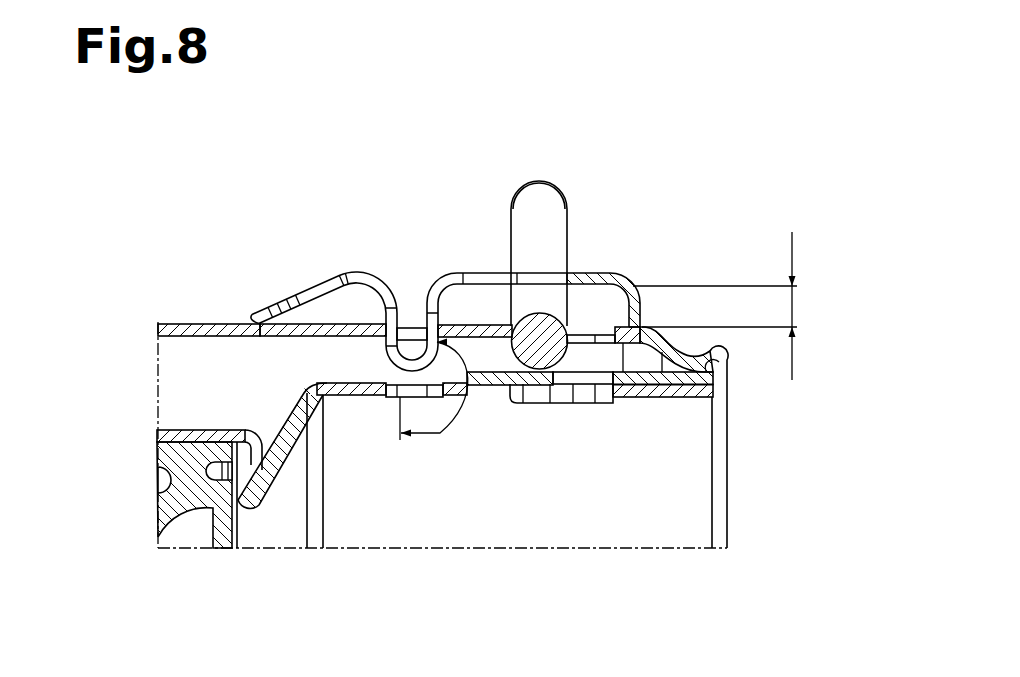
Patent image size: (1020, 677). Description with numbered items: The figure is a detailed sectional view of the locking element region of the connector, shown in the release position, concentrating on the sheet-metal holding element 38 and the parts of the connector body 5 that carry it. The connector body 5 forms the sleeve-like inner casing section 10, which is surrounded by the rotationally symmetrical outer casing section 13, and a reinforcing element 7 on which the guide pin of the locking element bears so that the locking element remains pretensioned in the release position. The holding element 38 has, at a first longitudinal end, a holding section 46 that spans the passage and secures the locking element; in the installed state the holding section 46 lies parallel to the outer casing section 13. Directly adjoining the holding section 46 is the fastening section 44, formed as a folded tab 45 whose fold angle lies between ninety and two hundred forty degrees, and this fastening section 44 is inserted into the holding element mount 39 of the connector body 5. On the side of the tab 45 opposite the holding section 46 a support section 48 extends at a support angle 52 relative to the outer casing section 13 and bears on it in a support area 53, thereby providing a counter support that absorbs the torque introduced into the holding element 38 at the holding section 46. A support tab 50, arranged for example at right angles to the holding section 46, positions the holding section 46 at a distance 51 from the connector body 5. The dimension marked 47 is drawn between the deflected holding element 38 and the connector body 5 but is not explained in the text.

The connector body 5 is at (729, 356).
The reinforcing element 7 is at (480, 405).
The inner casing section 10 is at (353, 395).
The outer casing section 13 is at (357, 330).
The holding element 38 is at (591, 251).
The holding element mount 39 is at (412, 308).
The fastening section 44 is at (330, 340).
The tab 45 is at (370, 358).
The holding section 46 is at (608, 262).
The spring travel 47 is at (437, 435).
The support section 48 is at (266, 300).
The support tab 50 is at (638, 302).
The distance 51 is at (800, 336).
The support angle 52 is at (340, 310).
The support area 53 is at (250, 340).